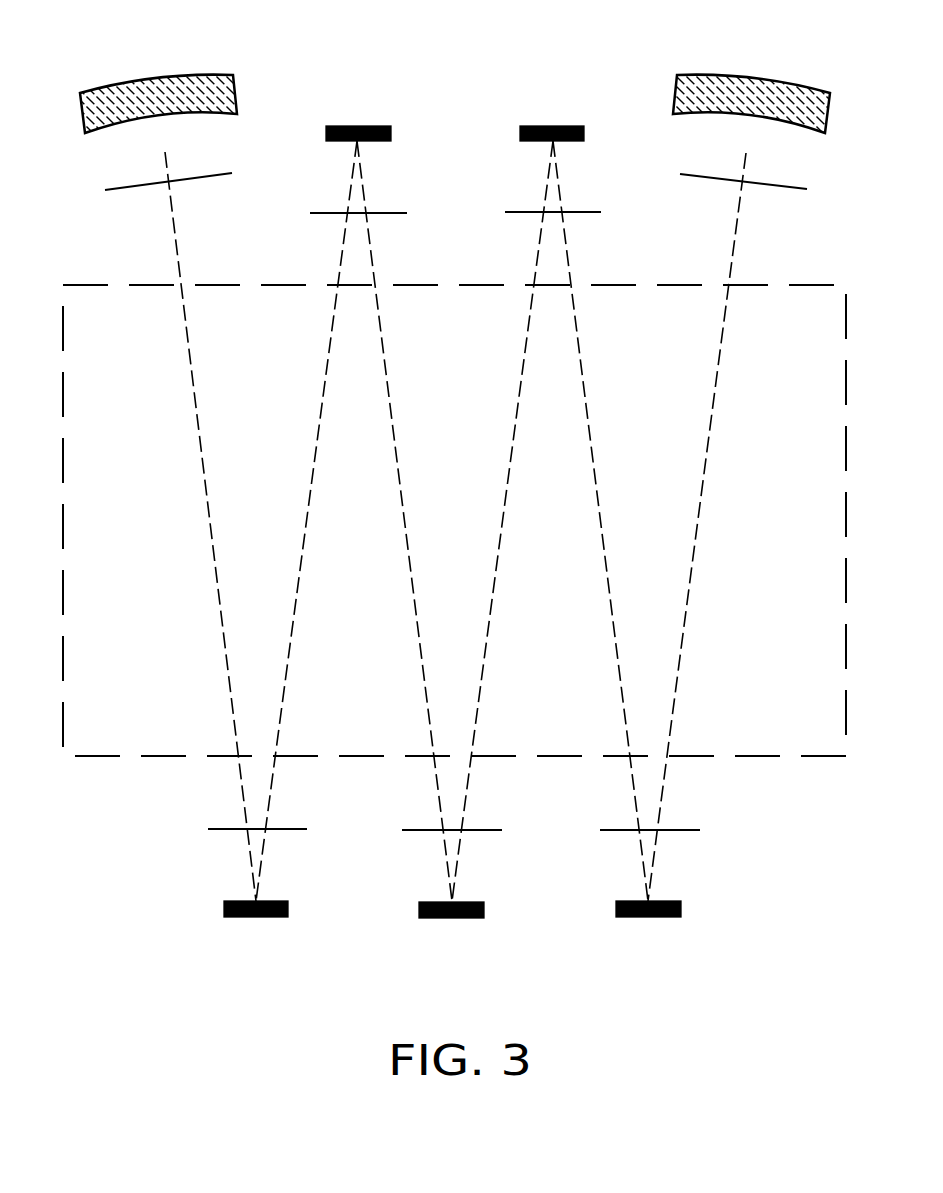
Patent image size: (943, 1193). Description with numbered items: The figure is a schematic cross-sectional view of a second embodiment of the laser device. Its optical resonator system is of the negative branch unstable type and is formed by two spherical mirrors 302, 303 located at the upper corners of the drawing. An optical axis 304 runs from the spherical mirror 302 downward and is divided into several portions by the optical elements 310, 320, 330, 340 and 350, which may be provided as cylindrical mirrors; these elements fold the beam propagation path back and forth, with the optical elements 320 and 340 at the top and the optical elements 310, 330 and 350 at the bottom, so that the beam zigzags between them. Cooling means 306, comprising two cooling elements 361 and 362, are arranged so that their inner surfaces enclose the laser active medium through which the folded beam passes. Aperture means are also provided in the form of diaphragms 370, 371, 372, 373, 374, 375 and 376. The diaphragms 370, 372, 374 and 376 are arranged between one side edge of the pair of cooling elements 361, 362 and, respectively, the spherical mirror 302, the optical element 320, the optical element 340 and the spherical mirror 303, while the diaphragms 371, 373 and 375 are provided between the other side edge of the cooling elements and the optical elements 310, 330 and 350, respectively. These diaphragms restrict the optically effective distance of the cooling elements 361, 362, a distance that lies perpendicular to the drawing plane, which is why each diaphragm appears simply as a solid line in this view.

The spherical mirror 302 is at (157, 80).
The spherical mirror 303 is at (760, 78).
The optical axis 304 is at (205, 487).
The cooling means 306 is at (466, 571).
The cooling element 361 is at (454, 520).
The cooling element 362 is at (820, 757).
The optical element 310 is at (256, 917).
The optical element 320 is at (357, 126).
The optical element 330 is at (452, 918).
The optical element 340 is at (553, 126).
The optical element 350 is at (648, 917).
The diaphragm 370 is at (105, 190).
The diaphragm 371 is at (210, 829).
The diaphragm 372 is at (312, 213).
The diaphragm 373 is at (406, 830).
The diaphragm 374 is at (508, 212).
The diaphragm 375 is at (604, 830).
The diaphragm 376 is at (682, 173).